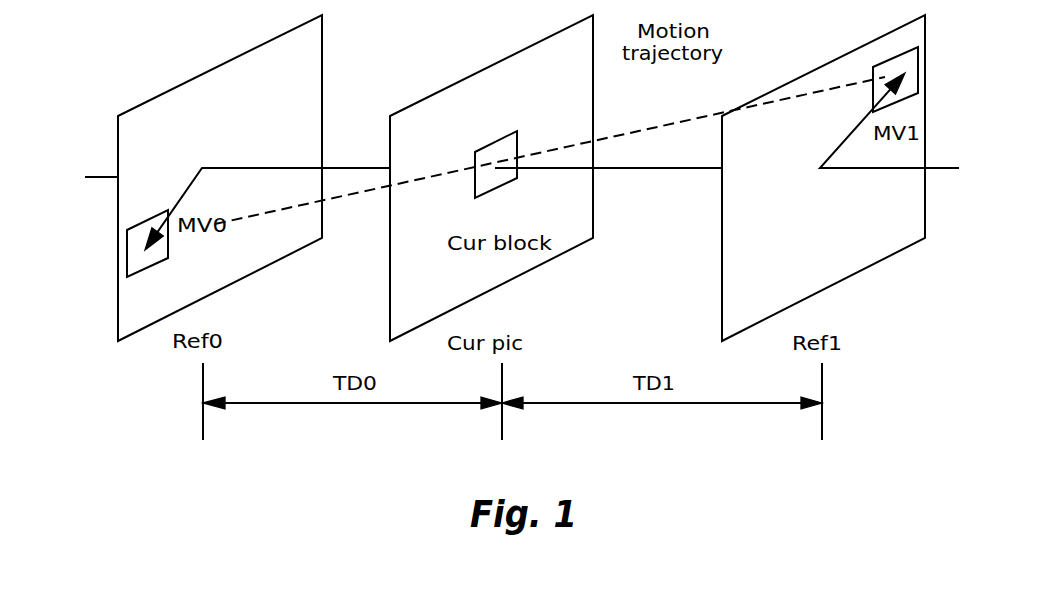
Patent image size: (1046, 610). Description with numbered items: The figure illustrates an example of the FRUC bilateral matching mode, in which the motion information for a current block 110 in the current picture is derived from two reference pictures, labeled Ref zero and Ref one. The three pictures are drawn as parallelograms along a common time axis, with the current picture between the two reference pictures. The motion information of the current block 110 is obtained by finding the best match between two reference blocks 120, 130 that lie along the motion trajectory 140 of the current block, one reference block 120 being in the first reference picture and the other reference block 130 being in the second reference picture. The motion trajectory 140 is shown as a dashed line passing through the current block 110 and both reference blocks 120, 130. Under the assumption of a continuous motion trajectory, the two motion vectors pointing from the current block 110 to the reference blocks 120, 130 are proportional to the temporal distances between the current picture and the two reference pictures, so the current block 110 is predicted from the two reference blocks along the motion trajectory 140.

The current block 110 is at (495, 142).
The reference block 120 is at (148, 221).
The reference block 130 is at (896, 57).
The motion trajectory 140 is at (683, 123).